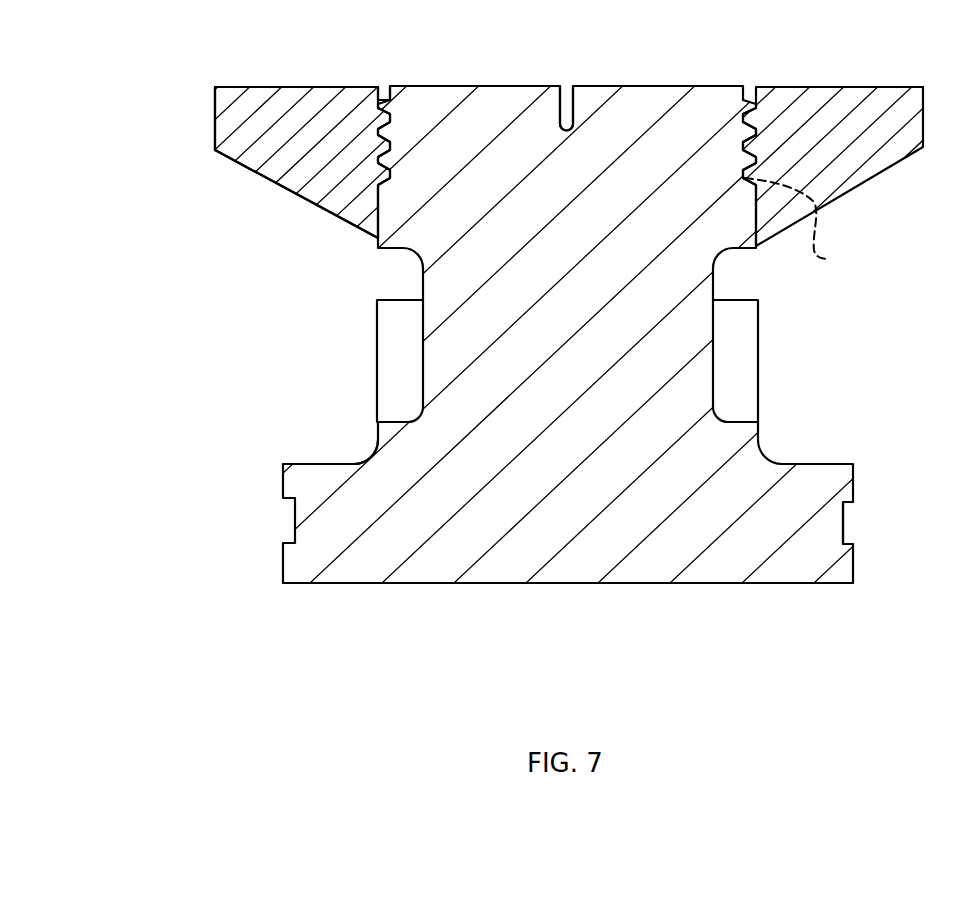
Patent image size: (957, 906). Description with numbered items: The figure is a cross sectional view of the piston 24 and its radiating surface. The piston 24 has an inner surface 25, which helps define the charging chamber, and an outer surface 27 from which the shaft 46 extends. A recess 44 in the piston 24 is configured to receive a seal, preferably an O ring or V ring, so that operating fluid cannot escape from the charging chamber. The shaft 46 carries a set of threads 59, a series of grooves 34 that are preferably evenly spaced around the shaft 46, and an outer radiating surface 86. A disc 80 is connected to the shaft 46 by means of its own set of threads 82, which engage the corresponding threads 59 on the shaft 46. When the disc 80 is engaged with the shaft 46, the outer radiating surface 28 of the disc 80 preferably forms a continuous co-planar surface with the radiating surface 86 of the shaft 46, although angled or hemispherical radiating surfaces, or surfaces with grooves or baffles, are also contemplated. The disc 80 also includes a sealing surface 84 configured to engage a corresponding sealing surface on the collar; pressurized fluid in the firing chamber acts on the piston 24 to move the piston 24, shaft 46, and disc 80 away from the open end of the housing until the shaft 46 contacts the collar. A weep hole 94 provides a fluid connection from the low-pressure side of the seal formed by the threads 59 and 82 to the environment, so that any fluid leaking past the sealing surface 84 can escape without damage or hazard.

The piston 24 is at (645, 565).
The inner surface 25 is at (478, 585).
The outer surface 27 is at (330, 464).
The outer radiating surface 28 is at (267, 87).
The grooves 34 is at (390, 343).
The recess 44 is at (853, 524).
The shaft 46 is at (495, 201).
The threads 59 is at (383, 106).
The disc 80 is at (222, 110).
The threads 82 is at (387, 120).
The sealing surface 84 is at (332, 212).
The outer radiating surface 86 is at (642, 87).
The weep hole 94 is at (478, 453).